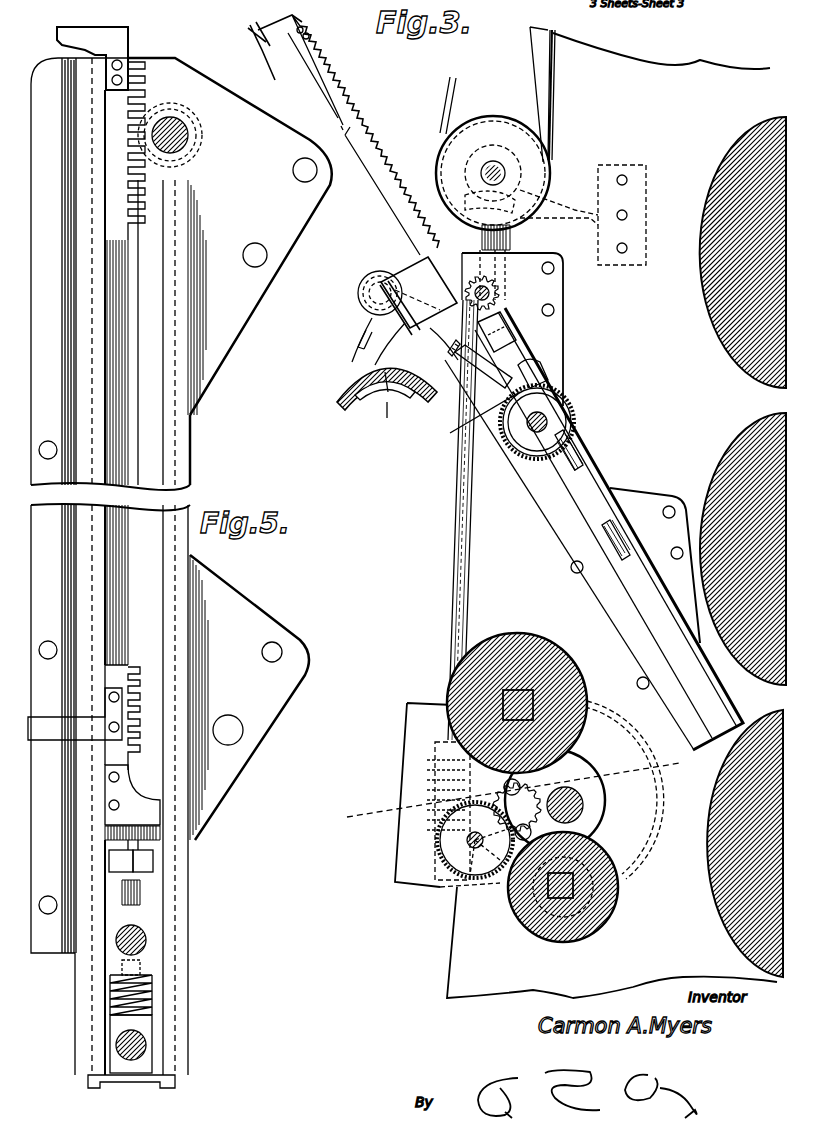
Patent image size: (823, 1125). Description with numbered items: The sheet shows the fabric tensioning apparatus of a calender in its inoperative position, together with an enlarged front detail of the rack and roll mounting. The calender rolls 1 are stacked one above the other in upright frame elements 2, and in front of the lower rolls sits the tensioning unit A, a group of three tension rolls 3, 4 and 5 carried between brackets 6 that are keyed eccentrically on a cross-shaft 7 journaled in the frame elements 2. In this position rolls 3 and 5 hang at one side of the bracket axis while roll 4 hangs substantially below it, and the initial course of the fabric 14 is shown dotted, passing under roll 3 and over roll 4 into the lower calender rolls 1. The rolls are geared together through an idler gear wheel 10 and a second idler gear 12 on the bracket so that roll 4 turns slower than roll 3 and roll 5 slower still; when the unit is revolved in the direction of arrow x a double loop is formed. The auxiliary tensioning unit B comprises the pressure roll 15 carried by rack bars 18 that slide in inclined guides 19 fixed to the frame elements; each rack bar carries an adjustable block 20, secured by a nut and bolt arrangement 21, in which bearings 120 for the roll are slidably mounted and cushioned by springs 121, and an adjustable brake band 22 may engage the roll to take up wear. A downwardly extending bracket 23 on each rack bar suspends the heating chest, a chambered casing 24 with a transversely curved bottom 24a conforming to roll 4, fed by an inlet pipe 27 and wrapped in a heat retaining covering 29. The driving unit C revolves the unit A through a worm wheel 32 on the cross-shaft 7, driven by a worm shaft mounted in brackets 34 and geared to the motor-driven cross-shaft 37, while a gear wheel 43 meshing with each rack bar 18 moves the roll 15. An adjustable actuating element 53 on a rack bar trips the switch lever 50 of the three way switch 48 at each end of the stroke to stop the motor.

In FIG. 3, the calender rolls 1 is at (752, 375).
In FIG. 3, the upright frame elements 2 is at (712, 405).
In FIG. 3, the tension roll 3 is at (440, 866).
In FIG. 3, the tension roll 4 is at (540, 928).
In FIG. 3, the tension roll 5 is at (588, 694).
In FIG. 3, the brackets 6 is at (582, 762).
In FIG. 3, the cross-shaft 7 is at (585, 798).
In FIG. 3, the idler gear wheel 10 is at (601, 963).
In FIG. 3, the second idler gear 12 is at (533, 802).
In FIG. 3, the initial course of the fabric 14 is at (347, 820).
In FIG. 3, the auxiliary tension or pressure roll 15 is at (575, 417).
In FIG. 5, the rack bars 18 is at (120, 242).
In FIG. 3, the rack bars 18 is at (368, 148).
In FIG. 5, the guides 19 is at (188, 1017).
In FIG. 3, the guides 19 is at (617, 596).
In FIG. 5, the adjustable block 20 is at (150, 979).
In FIG. 3, the adjustable block 20 is at (540, 368).
In FIG. 5, the nut and bolt arrangement 21 is at (140, 845).
In FIG. 3, the nut and bolt arrangement 21 is at (505, 334).
In FIG. 3, the adjustable brake band 22 is at (452, 432).
In FIG. 3, the bracket 23 is at (372, 330).
In FIG. 3, the casing 24 is at (342, 390).
In FIG. 3, the transversely curved bottom 24a is at (394, 416).
In FIG. 3, the inlet pipe 27 is at (358, 347).
In FIG. 3, the heat retaining covering 29 is at (350, 362).
In FIG. 3, the worm wheel 32 is at (640, 872).
In FIG. 3, the brackets 34 is at (512, 238).
In FIG. 5, the rotatable cross-shaft 37 is at (185, 128).
In FIG. 3, the rotatable cross-shaft 37 is at (490, 160).
In FIG. 5, the gear wheel 43 is at (230, 236).
In FIG. 3, the three way switch 48 is at (368, 275).
In FIG. 3, the switch lever 50 is at (360, 290).
In FIG. 5, the adjustable actuating element 53 is at (50, 748).
In FIG. 3, the adjustable actuating element 53 is at (276, 80).
In FIG. 5, the bearings 120 is at (148, 1031).
In FIG. 5, the springs 121 is at (140, 996).
In FIG. 3, the tensioning unit A is at (480, 915).
In FIG. 3, the auxiliary tensioning unit B is at (620, 480).
In FIG. 3, the driving unit C is at (452, 502).
In FIG. 3, the arrow X x is at (535, 617).